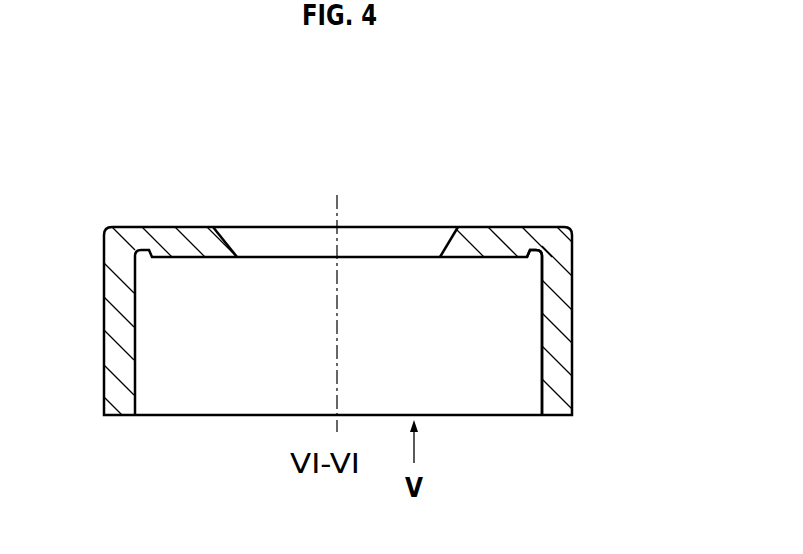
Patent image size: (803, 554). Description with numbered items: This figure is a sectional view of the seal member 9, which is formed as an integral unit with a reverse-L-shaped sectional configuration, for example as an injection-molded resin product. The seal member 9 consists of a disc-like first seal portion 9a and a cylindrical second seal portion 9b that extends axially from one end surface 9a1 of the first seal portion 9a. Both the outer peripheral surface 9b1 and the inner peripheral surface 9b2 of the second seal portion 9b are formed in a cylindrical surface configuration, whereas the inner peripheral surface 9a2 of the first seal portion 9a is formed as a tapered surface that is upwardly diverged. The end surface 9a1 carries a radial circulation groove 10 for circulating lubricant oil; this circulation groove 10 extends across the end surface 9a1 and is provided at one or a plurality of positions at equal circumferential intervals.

The seal member 9 is at (555, 215).
The first seal portion 9a is at (166, 233).
The one end surface 9a1 is at (191, 258).
The inner peripheral surface 9a2 is at (438, 241).
The second seal portion 9b is at (112, 318).
The outer peripheral surface 9b1 is at (573, 327).
The inner peripheral surface 9b2 is at (540, 372).
The circulation groove 10 is at (494, 258).